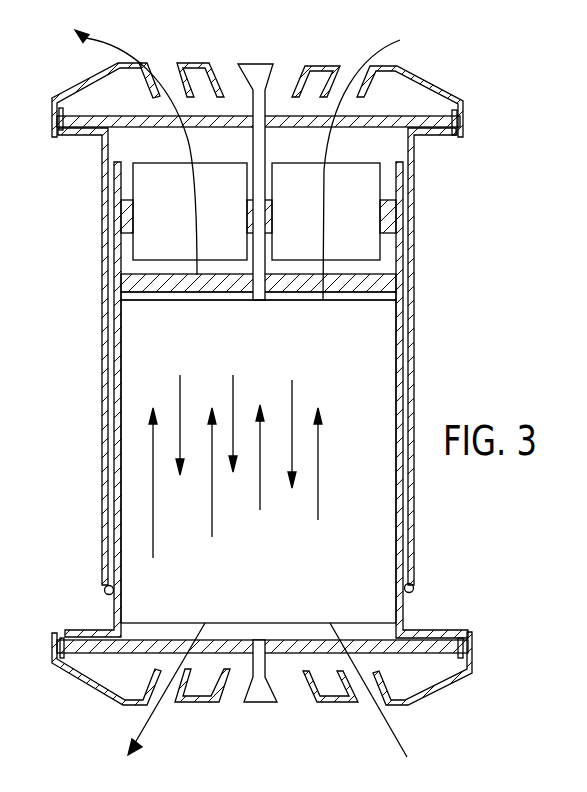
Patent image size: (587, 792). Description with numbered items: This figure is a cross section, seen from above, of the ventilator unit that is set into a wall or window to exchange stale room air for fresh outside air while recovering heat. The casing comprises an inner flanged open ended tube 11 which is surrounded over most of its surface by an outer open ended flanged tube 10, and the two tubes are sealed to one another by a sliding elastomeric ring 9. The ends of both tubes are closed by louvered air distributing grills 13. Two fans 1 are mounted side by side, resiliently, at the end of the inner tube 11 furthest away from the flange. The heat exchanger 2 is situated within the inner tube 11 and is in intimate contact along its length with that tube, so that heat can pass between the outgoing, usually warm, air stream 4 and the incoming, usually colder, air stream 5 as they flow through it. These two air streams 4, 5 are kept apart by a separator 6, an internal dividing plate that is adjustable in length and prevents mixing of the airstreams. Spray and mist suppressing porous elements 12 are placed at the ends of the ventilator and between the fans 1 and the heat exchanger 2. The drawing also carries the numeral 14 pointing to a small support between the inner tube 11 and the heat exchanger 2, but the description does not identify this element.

The fans 1 is at (217, 200).
The heat exchanger 2 is at (357, 446).
The outgoing air stream 4 is at (123, 150).
The incoming air stream 5 is at (370, 162).
The separator 6 is at (250, 80).
The sliding elastomeric ring 9 is at (105, 592).
The outer open ended flanged tube 10 is at (108, 453).
The inner flanged open ended tube 11 is at (120, 395).
The spray and mist suppressing porous elements 12 is at (437, 157).
The louvered air distributing grills 13 is at (286, 86).
The support block 14 is at (126, 217).